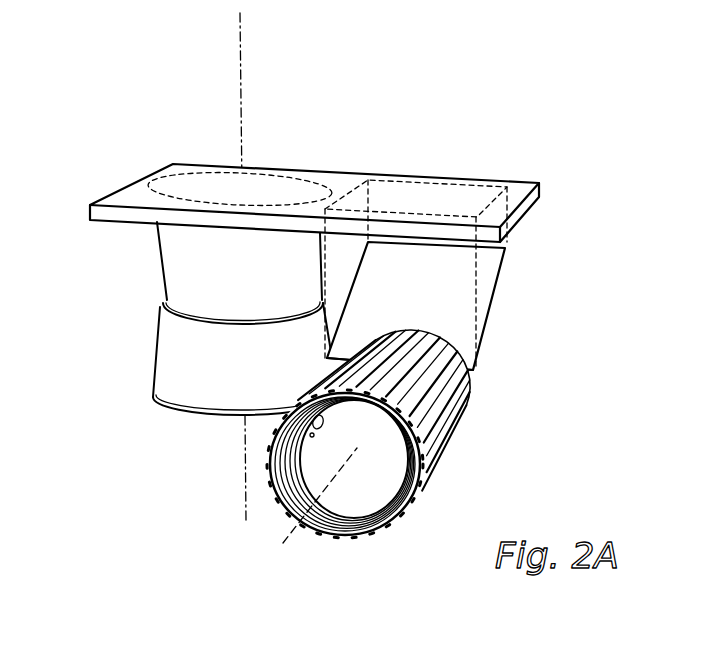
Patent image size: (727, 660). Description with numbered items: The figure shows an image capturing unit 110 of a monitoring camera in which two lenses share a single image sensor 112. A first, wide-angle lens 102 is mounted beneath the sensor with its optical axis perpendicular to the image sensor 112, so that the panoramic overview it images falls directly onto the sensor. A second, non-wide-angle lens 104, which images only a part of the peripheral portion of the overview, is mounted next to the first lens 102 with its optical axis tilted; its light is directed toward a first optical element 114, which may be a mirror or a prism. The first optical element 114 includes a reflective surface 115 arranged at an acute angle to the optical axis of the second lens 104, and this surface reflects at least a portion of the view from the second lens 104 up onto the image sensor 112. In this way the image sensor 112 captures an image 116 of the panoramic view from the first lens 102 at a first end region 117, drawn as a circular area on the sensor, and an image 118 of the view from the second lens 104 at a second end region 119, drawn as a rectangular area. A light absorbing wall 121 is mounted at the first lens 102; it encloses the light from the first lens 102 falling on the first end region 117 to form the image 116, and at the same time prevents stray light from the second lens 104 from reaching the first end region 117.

The image capturing unit 110 is at (158, 98).
The image sensor 112 is at (145, 225).
The first optical element 114 is at (467, 373).
The reflective surface 115 is at (483, 298).
The image of the panoramic view 116 is at (175, 197).
The first end region 117 is at (310, 173).
The image of the second lens view 118 is at (413, 197).
The second end region 119 is at (498, 180).
The light absorbing wall 121 is at (187, 298).
The first lens 102 is at (210, 415).
The second lens 104 is at (380, 507).